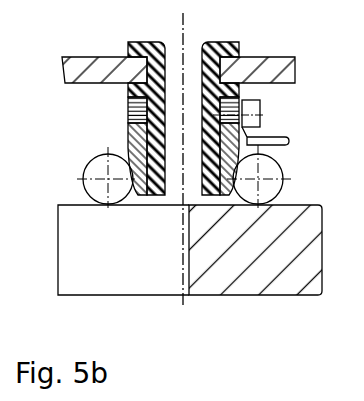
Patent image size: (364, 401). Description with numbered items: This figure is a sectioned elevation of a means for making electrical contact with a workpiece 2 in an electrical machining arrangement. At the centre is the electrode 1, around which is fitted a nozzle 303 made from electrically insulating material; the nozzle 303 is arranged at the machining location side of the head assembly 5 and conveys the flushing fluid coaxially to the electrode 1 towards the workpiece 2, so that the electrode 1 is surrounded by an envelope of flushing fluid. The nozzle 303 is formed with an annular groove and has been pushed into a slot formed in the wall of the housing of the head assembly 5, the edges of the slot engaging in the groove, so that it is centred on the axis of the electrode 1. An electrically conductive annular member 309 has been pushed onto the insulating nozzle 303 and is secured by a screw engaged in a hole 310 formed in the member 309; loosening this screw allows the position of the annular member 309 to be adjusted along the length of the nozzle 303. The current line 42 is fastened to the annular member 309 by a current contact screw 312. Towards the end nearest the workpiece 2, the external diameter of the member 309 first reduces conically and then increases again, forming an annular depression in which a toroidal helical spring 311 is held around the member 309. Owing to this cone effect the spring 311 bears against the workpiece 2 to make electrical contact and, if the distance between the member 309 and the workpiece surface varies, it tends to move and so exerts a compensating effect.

The electrode 1 is at (190, 237).
The workpiece 2 is at (85, 253).
The head assembly 5 is at (100, 63).
The current line 42 is at (283, 139).
The nozzle 303 is at (237, 42).
The annular member 309 is at (138, 141).
The hole 310 is at (135, 117).
The toroidal helical spring 311 is at (100, 175).
The current contact screw 312 is at (256, 109).